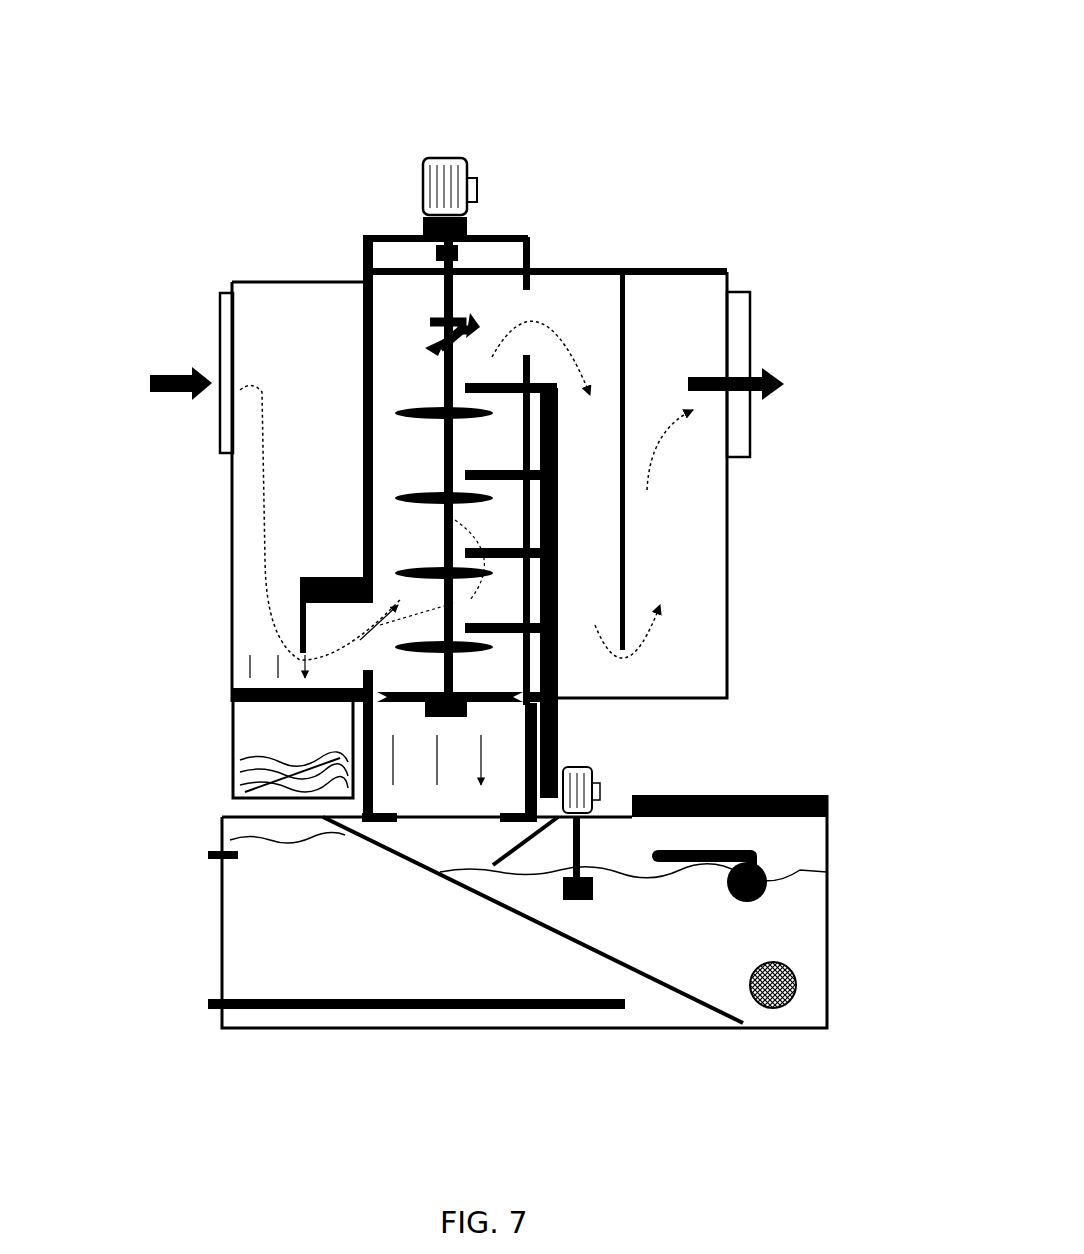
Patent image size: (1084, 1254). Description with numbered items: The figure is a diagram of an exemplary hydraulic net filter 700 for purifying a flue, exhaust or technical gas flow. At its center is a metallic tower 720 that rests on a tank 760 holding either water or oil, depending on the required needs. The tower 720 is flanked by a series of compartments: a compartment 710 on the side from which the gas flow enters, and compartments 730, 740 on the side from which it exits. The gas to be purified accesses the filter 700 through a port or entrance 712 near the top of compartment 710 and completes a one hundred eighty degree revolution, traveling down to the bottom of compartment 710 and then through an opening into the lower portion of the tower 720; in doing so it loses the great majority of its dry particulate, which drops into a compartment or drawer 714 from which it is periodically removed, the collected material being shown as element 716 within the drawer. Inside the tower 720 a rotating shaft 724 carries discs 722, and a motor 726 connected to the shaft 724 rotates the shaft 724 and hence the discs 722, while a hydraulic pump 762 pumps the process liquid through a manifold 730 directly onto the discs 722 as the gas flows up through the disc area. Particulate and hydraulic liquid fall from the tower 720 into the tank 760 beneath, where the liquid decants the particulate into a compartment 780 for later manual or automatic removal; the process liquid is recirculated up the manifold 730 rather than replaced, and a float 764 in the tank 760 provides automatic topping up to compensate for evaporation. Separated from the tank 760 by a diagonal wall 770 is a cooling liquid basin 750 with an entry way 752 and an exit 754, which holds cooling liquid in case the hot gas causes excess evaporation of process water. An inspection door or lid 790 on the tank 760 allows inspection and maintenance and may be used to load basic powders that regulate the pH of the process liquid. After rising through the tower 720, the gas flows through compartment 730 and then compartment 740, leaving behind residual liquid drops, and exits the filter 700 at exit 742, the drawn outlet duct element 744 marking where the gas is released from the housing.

The hydraulic net filter 700 is at (100, 113).
The compartment 710 is at (293, 310).
The port or entrance 712 is at (220, 343).
The compartment or drawer 714 is at (252, 730).
The collected debris 716 is at (300, 773).
The metallic tower 720 is at (385, 318).
The discs 722 is at (420, 405).
The rotating shaft 724 is at (455, 377).
The motor 726 is at (430, 173).
The manifold 730 is at (557, 448).
The compartment 740 is at (600, 305).
The exit 742 is at (655, 315).
The air outlet 744 is at (750, 331).
The cooling liquid basin 750 is at (257, 933).
The entry way 752 is at (217, 1003).
The exit 754 is at (208, 855).
The tank 760 is at (802, 900).
The hydraulic pump 762 is at (593, 893).
The float 764 is at (763, 872).
The diagonal wall 770 is at (677, 993).
The compartment 780 is at (797, 990).
The inspection door or lid 790 is at (720, 797).